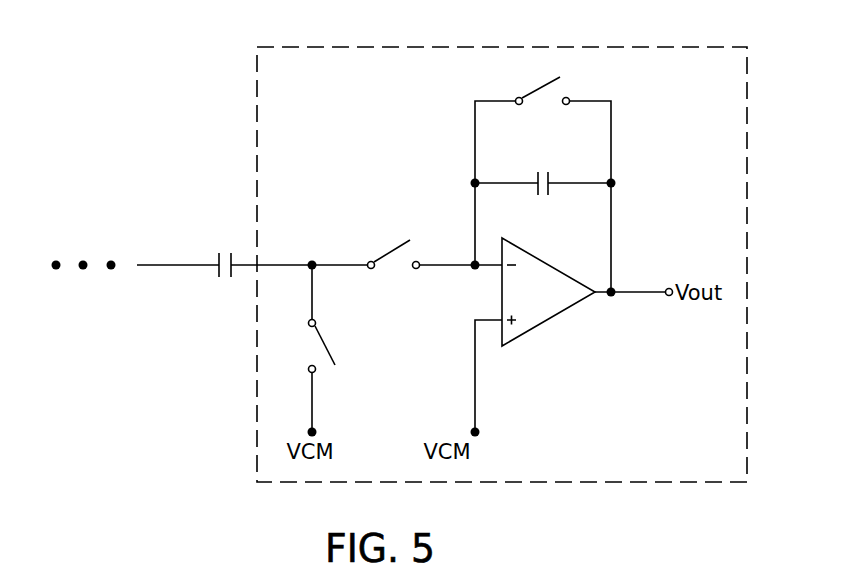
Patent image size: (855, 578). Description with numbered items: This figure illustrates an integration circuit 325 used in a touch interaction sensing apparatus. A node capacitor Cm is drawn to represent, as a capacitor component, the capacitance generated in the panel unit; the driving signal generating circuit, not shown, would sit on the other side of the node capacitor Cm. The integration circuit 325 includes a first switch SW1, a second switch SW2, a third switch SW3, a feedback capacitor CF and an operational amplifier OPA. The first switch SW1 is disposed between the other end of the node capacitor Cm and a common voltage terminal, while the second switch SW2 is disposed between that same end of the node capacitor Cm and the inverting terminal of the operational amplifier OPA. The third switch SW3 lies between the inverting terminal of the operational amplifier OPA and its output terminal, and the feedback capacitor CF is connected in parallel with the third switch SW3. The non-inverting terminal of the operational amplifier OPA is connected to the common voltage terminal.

The integration circuit 325 is at (502, 46).
The node capacitor Cm is at (222, 254).
The first switch SW1 is at (348, 346).
The second switch SW2 is at (394, 268).
The third switch SW3 is at (543, 105).
The feedback capacitor CF is at (543, 194).
The operational amplifier OPA is at (548, 292).